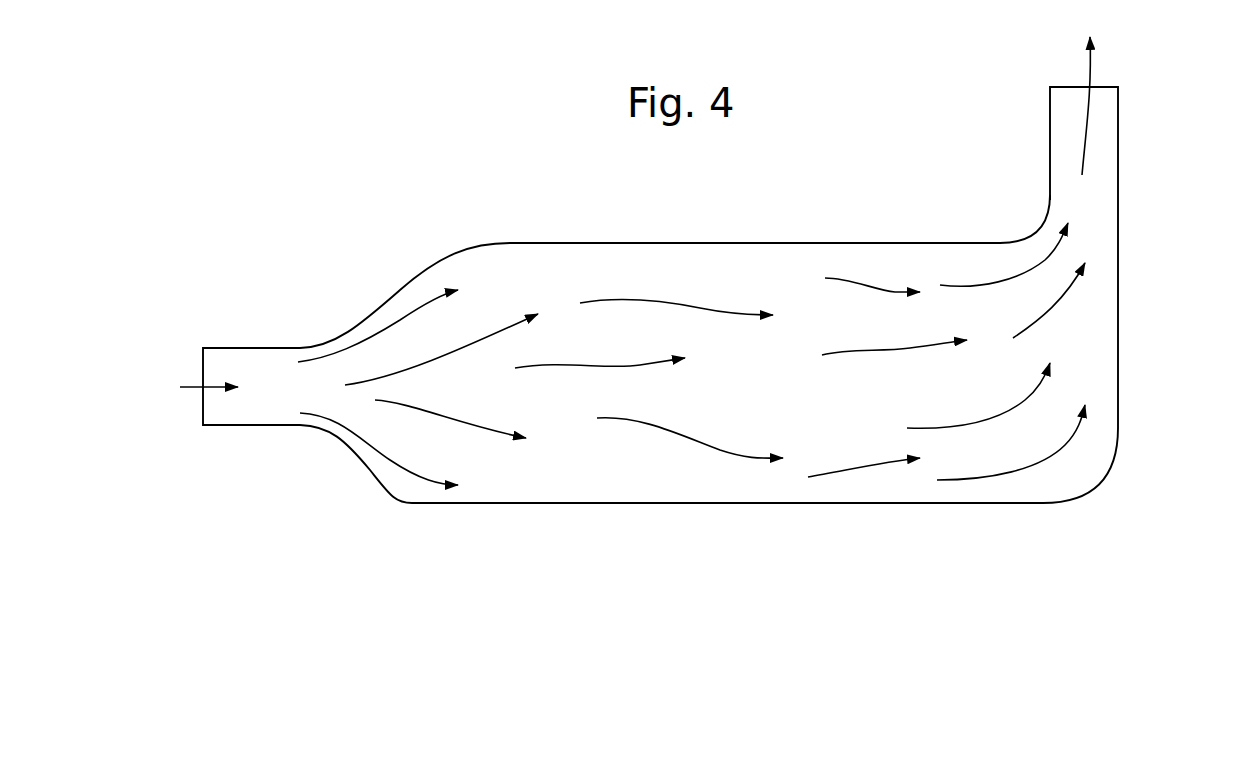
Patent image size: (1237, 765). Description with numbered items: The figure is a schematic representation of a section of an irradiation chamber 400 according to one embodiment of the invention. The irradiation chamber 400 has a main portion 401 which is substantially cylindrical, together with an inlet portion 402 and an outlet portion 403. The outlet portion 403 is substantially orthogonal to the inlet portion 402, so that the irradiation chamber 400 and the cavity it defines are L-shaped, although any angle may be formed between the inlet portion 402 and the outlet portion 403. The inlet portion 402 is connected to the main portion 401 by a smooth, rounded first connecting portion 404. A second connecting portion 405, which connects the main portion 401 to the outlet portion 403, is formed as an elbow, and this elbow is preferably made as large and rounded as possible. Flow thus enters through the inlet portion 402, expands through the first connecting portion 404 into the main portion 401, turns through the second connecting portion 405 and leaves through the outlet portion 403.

The irradiation chamber 400 is at (910, 75).
The main portion 401 is at (1035, 543).
The inlet portion 402 is at (300, 543).
The outlet portion 403 is at (1147, 86).
The first connecting portion 404 is at (412, 543).
The second connecting portion 405 is at (1147, 200).